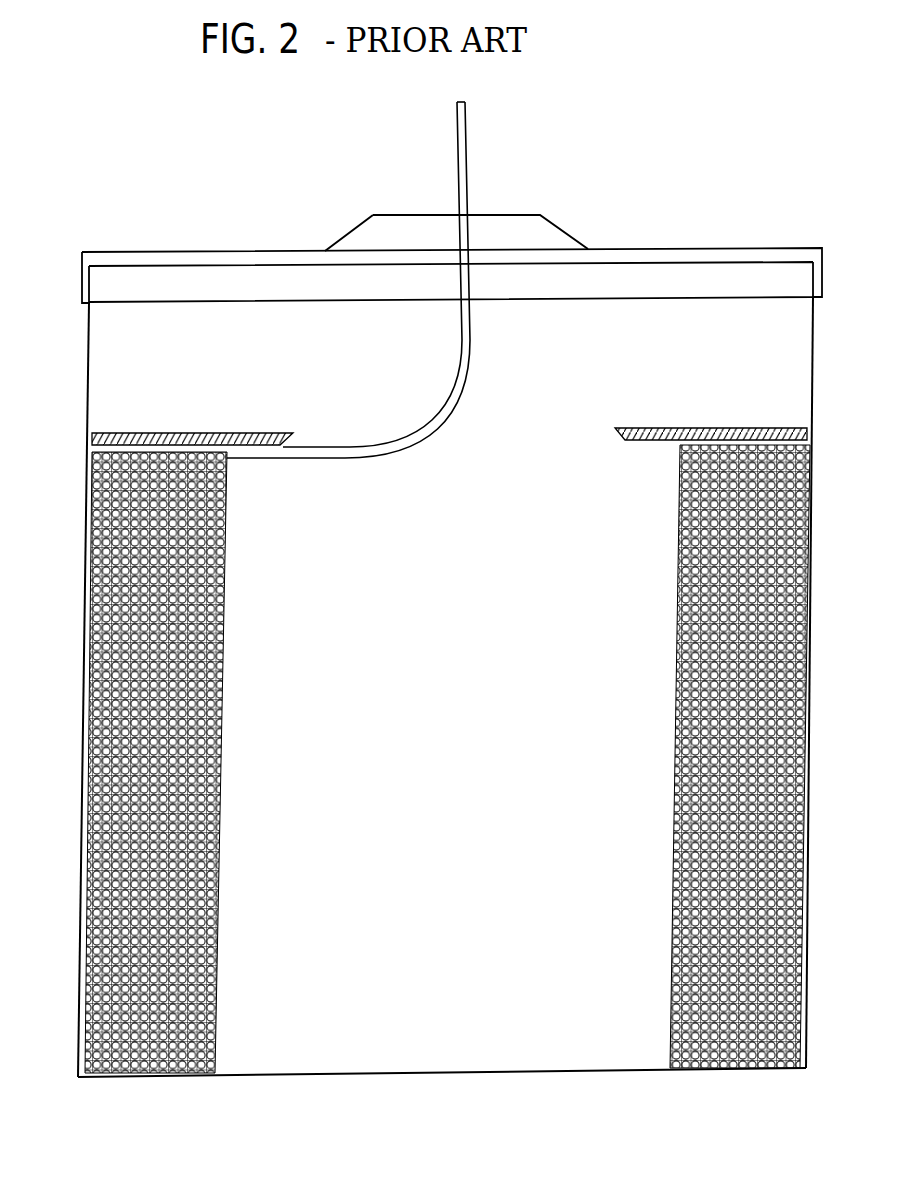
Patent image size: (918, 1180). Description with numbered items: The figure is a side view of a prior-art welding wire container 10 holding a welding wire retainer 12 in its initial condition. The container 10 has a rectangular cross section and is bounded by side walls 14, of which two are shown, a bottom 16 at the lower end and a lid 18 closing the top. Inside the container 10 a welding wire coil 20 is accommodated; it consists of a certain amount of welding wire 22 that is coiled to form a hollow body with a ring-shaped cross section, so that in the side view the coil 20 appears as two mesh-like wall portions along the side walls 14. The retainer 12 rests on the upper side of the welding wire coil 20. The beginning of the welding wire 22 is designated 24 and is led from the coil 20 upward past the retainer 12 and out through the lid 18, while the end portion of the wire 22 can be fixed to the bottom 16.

The welding wire container 10 is at (177, 200).
The welding wire retainer 12 is at (710, 429).
The side walls 14 is at (82, 700).
The bottom 16 is at (467, 1072).
The lid 18 is at (707, 248).
The welding wire coil 20 is at (676, 836).
The welding wire 22 is at (462, 192).
The beginning of the welding wire 24 is at (457, 100).